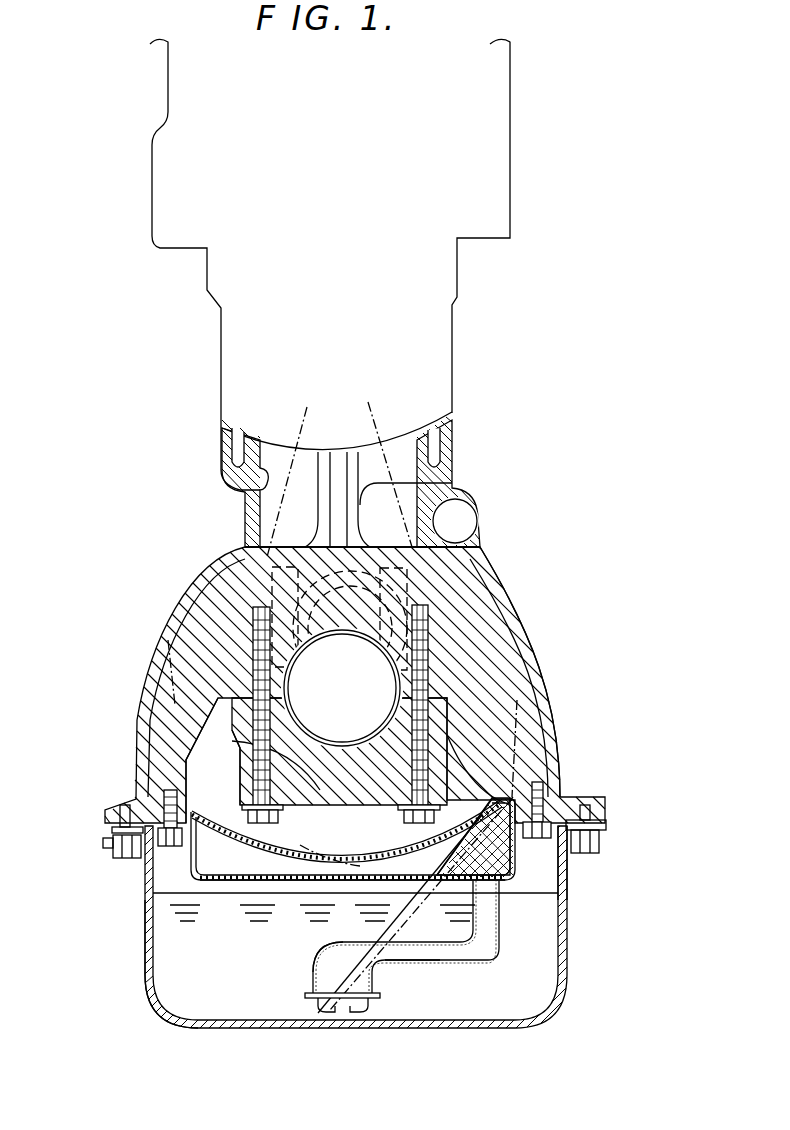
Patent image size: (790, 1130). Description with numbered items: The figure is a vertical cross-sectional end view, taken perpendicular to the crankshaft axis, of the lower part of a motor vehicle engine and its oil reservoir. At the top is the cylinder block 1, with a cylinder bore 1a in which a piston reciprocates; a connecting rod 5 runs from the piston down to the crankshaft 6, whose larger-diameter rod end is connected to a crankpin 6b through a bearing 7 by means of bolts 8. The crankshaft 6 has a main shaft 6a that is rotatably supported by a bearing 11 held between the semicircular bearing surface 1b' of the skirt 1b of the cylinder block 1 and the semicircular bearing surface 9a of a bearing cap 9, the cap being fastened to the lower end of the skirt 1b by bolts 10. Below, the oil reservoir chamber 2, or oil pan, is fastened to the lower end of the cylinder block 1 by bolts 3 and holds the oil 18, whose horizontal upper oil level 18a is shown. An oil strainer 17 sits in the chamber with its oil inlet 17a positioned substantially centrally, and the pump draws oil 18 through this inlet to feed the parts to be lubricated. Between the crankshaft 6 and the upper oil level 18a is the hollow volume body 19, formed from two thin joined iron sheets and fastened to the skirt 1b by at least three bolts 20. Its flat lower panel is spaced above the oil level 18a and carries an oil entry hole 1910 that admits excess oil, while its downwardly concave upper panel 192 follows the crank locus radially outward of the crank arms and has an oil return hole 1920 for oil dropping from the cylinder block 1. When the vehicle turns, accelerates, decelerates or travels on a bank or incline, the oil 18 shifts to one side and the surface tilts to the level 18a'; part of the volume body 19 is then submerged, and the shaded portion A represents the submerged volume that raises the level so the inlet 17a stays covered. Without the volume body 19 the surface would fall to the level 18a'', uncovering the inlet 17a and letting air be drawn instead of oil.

The cylinder block 1 is at (493, 393).
The cylinder bore 1a is at (247, 493).
The skirt 1b is at (352, 685).
The semicircular bearing surface 1b' is at (496, 672).
The oil reservoir chamber 2 is at (147, 975).
The bolts 3 is at (108, 862).
The connecting rod 5 is at (415, 484).
The crankshaft 6 is at (233, 763).
The main shaft 6a is at (240, 780).
The crankpin 6b is at (455, 588).
The bearing 7 is at (445, 560).
The bolts 8 is at (245, 552).
The bearing cap 9 is at (440, 765).
The semicircular bearing surface 9a is at (261, 760).
The bolts 10 is at (262, 824).
The bearing 11 is at (398, 672).
The oil strainer 17 is at (460, 963).
The oil inlet 17a is at (335, 1013).
The oil 18 is at (185, 1026).
The upper oil level 18a is at (603, 875).
The tilted oil level 18a' is at (303, 961).
The oil level without volume body 18a'' is at (411, 1024).
The volume body 19 is at (212, 880).
The upper panel 192 is at (247, 832).
The oil entry hole 1910 is at (343, 882).
The oil return hole 1920 is at (338, 856).
The bolts 20 is at (163, 847).
The shaded portion A is at (500, 850).